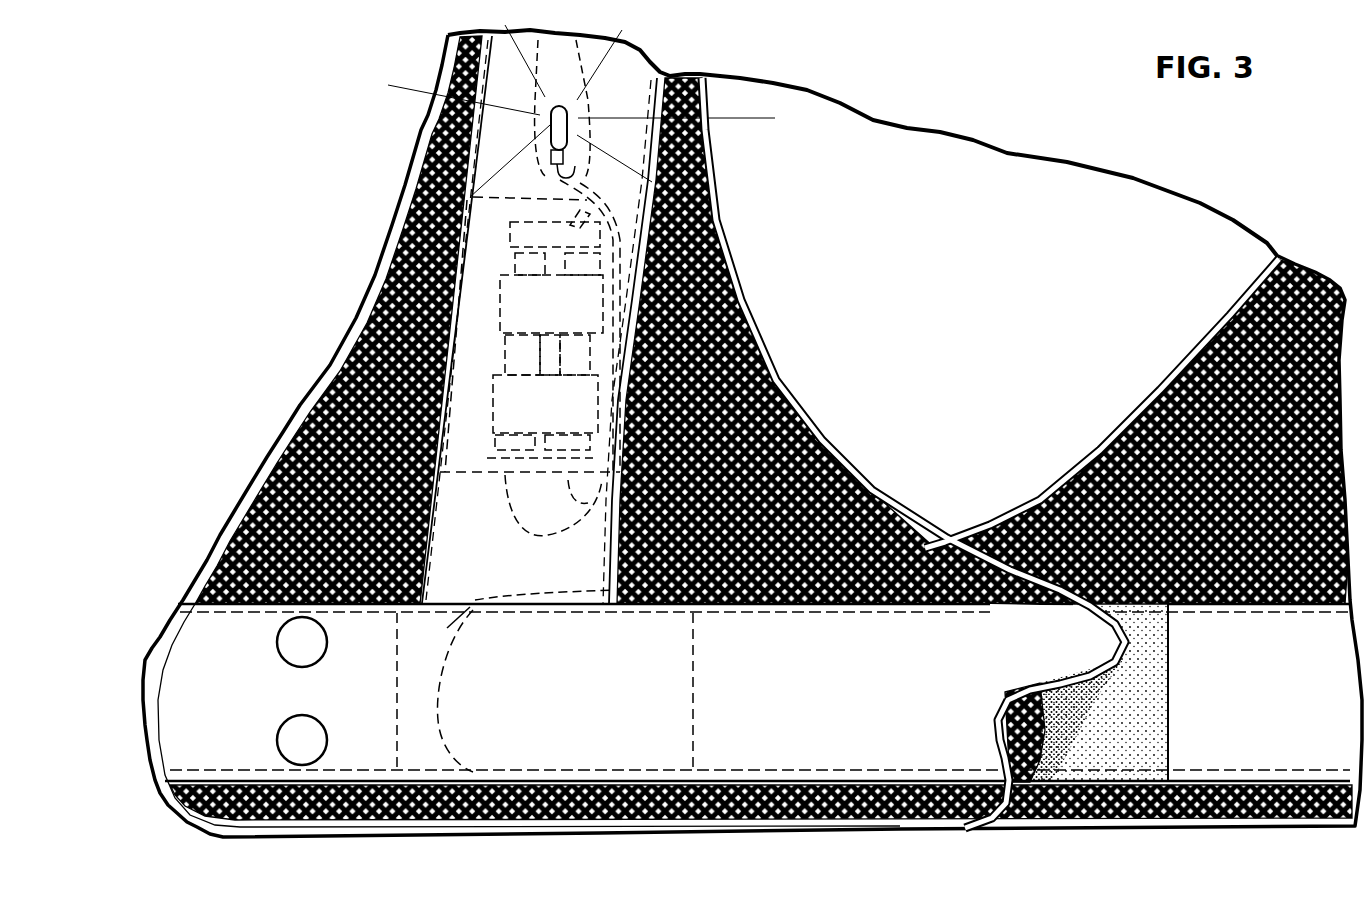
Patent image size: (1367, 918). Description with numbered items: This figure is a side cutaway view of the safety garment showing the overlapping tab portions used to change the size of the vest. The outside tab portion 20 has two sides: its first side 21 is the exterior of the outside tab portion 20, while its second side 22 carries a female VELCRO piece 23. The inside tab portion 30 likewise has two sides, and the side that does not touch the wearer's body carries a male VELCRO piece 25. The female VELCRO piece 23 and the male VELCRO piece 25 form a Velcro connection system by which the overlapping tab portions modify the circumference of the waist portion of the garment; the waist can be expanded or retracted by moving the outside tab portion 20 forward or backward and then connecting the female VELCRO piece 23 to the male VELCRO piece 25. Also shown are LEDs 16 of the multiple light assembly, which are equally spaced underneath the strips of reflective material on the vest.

The LEDs 16 is at (581, 111).
The outside tab portion 20 is at (949, 764).
The first side 21 is at (1066, 635).
The second side 22 is at (986, 732).
The female VELCRO piece 23 is at (1053, 713).
The male VELCRO piece 25 is at (1170, 693).
The inside tab portion 30 is at (761, 829).